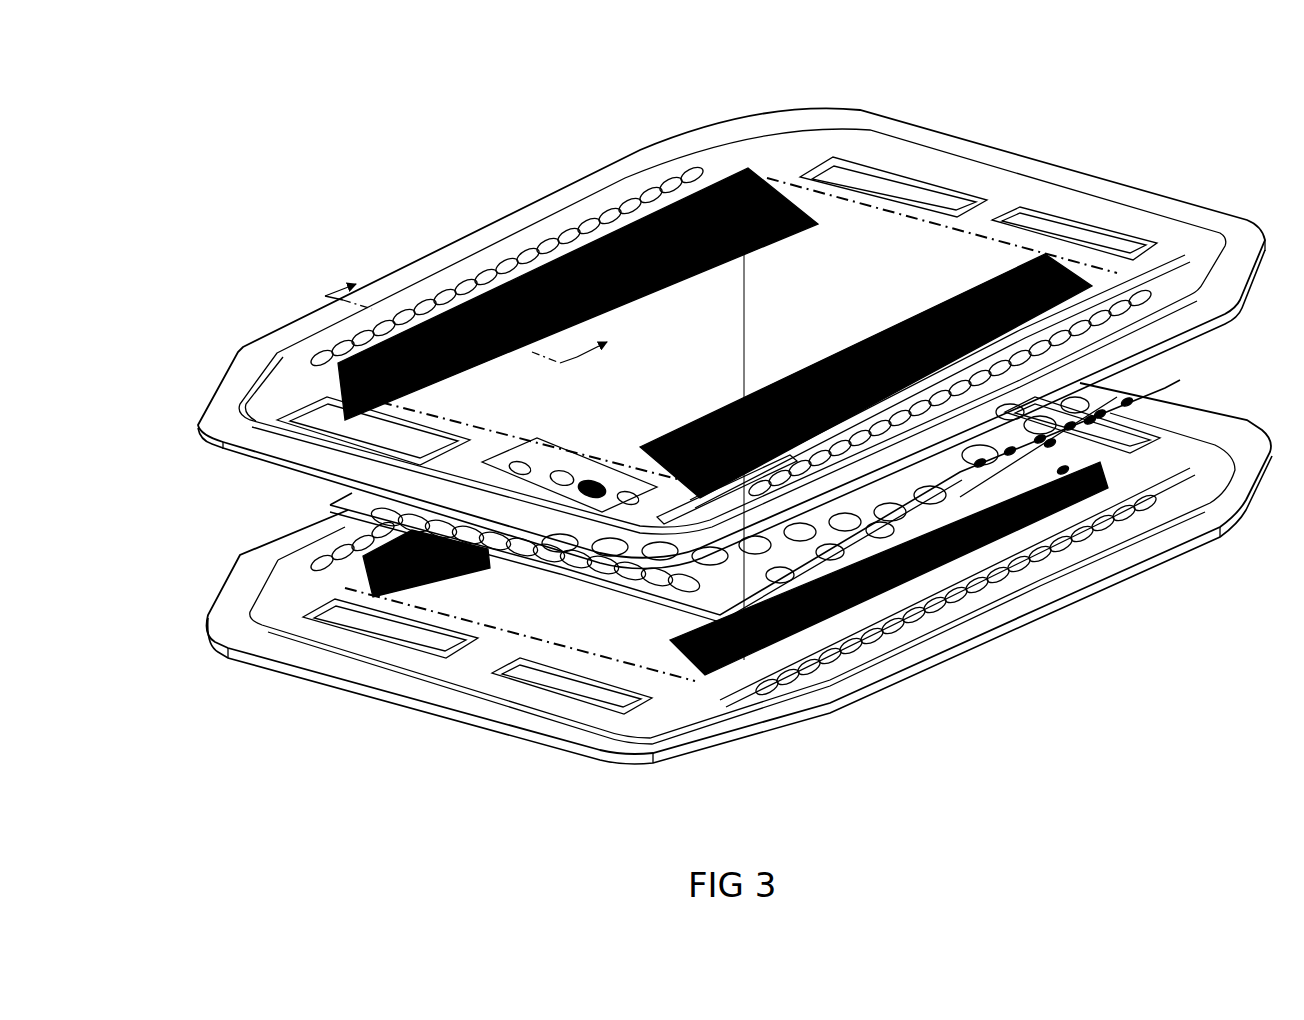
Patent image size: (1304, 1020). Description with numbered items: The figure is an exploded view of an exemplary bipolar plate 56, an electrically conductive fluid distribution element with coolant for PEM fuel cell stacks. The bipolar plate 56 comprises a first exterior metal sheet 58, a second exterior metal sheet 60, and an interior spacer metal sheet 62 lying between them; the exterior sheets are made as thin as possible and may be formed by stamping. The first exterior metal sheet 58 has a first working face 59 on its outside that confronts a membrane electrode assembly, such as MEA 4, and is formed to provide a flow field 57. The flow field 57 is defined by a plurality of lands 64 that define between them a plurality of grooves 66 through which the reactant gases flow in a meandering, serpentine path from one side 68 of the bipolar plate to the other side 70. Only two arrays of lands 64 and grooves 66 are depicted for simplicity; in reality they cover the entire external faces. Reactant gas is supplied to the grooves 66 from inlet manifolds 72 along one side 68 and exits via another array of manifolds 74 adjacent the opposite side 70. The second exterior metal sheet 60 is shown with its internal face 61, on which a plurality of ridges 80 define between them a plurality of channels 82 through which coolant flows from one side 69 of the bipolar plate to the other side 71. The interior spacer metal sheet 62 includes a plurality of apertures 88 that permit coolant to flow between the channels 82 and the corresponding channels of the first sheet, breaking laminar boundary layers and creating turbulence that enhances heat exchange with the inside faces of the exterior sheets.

The bipolar plate 56 is at (395, 240).
The flow field 57 is at (745, 183).
The first exterior metal sheet 58 is at (913, 250).
The first working face 59 is at (640, 196).
The second exterior metal sheet 60 is at (555, 620).
The internal face 61 is at (980, 557).
The interior spacer metal sheet 62 is at (1130, 392).
The lands 64 is at (540, 255).
The grooves 66 is at (483, 293).
The one side of the bipolar plate 68 is at (933, 137).
The one side of the bipolar plate 69 is at (947, 603).
The other side of the bipolar plate 70 is at (220, 446).
The other side of the bipolar plate 71 is at (333, 555).
The inlet manifolds 72 is at (837, 193).
The manifolds 74 is at (418, 402).
The ridges 80 is at (482, 553).
The channels 82 is at (450, 592).
The apertures 88 is at (1207, 457).
The MEA 4 is at (461, 322).